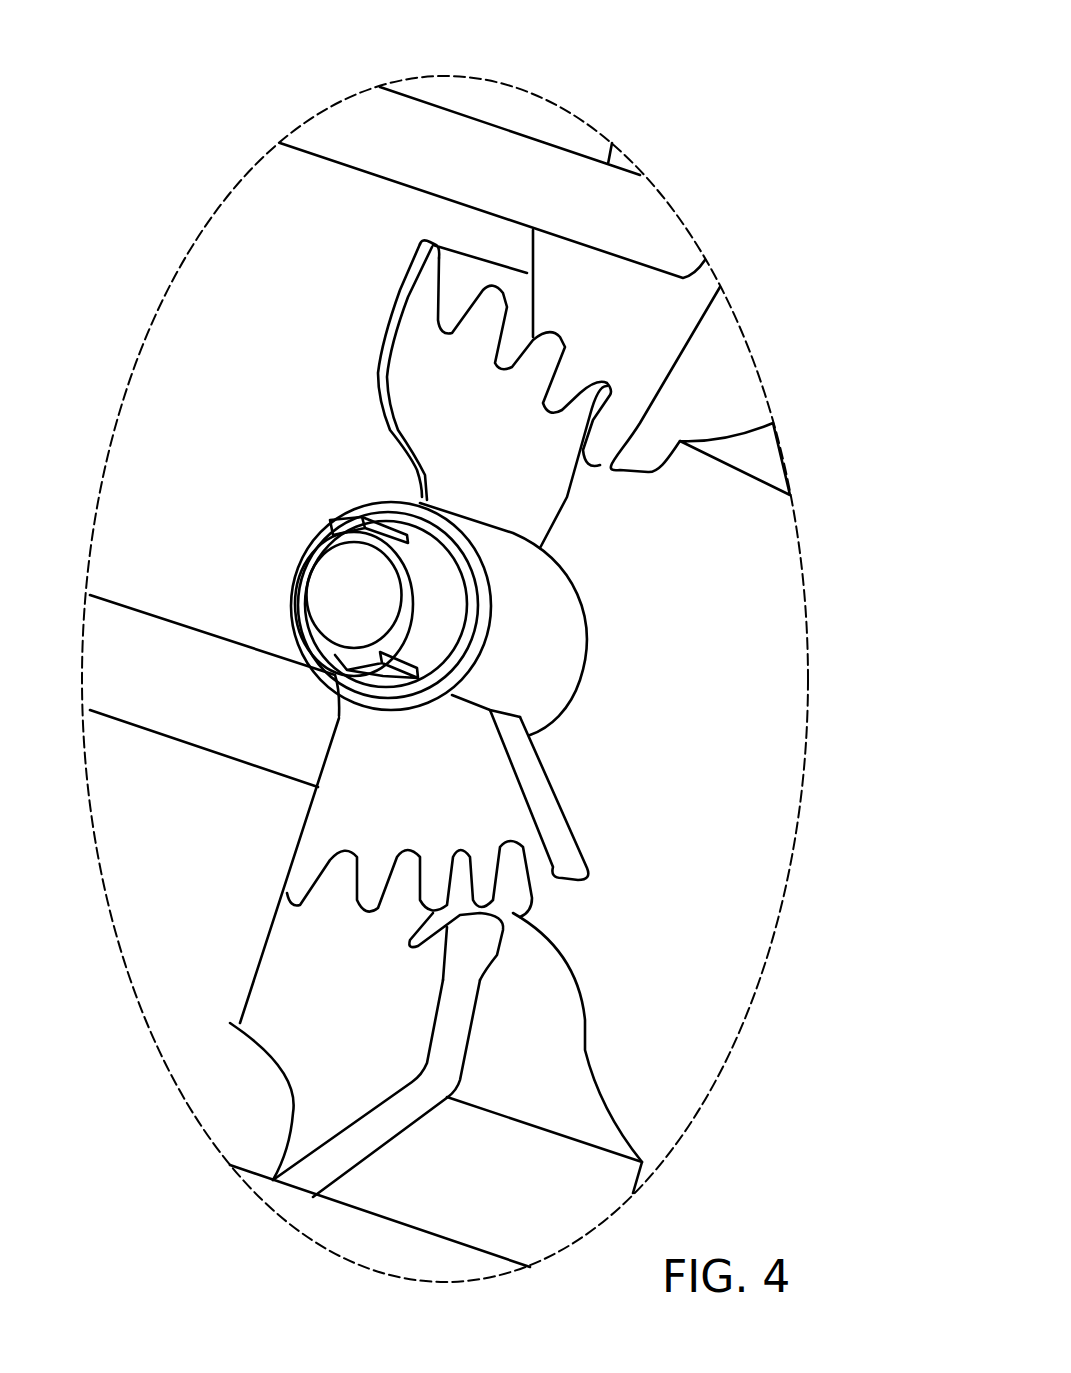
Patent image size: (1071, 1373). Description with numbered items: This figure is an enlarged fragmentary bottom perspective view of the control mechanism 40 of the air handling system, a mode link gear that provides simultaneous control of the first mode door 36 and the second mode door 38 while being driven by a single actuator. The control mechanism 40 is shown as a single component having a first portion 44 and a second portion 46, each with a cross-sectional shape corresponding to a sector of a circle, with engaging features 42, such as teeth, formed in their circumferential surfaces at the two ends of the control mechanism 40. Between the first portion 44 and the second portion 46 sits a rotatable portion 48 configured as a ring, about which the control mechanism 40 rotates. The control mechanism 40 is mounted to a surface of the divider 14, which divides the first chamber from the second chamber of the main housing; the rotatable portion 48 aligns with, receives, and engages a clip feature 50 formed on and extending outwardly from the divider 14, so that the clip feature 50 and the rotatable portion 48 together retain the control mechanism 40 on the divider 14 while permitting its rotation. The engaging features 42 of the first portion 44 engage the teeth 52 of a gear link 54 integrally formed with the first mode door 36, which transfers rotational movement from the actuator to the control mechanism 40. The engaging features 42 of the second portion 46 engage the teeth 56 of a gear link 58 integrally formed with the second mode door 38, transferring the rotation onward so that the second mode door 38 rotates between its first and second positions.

The divider 14 is at (710, 738).
The first mode door 36 is at (657, 287).
The second mode door 38 is at (350, 987).
The control mechanism 40 is at (511, 687).
The engaging features 42 is at (458, 282).
The first portion 44 is at (530, 520).
The second portion 46 is at (465, 802).
The rotatable portion 48 is at (513, 640).
The clip feature 50 is at (316, 547).
The teeth 52 is at (513, 453).
The gear link 54 is at (643, 333).
The teeth 56 is at (473, 958).
The gear link 58 is at (347, 1075).